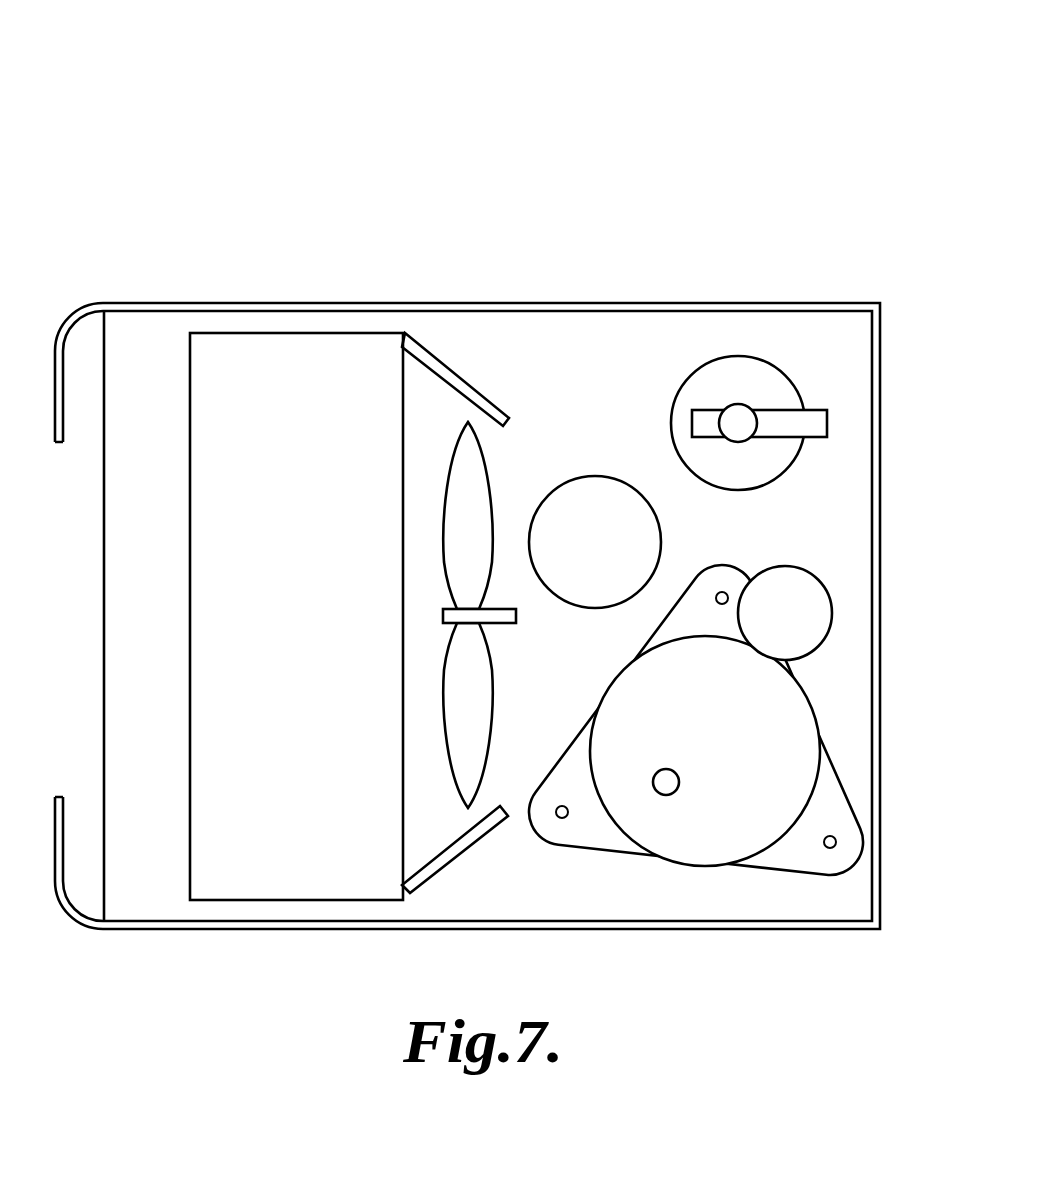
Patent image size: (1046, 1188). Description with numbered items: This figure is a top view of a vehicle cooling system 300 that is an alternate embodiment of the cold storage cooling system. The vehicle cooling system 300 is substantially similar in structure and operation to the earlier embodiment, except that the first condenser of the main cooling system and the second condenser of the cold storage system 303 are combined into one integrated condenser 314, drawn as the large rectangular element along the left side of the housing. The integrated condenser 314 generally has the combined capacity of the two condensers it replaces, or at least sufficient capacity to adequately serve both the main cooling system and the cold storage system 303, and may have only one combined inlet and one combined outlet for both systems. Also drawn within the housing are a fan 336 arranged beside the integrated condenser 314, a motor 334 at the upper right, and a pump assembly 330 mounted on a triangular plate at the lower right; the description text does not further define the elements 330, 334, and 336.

The vehicle cooling system 300 is at (730, 160).
The cold storage system 303 is at (427, 302).
The integrated condenser 314 is at (270, 885).
The pump assembly 330 is at (807, 708).
The motor 334 is at (738, 357).
The fan 336 is at (482, 763).